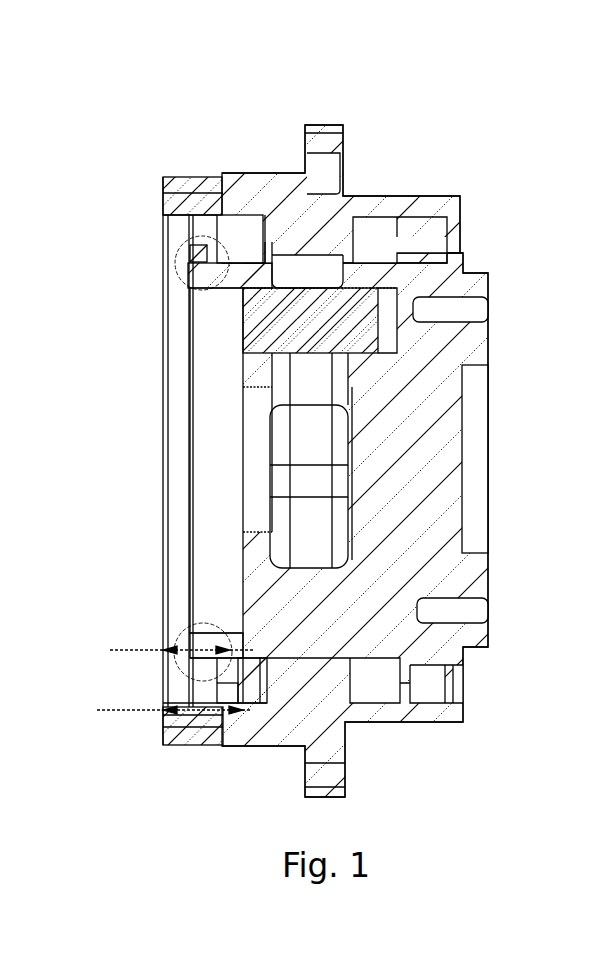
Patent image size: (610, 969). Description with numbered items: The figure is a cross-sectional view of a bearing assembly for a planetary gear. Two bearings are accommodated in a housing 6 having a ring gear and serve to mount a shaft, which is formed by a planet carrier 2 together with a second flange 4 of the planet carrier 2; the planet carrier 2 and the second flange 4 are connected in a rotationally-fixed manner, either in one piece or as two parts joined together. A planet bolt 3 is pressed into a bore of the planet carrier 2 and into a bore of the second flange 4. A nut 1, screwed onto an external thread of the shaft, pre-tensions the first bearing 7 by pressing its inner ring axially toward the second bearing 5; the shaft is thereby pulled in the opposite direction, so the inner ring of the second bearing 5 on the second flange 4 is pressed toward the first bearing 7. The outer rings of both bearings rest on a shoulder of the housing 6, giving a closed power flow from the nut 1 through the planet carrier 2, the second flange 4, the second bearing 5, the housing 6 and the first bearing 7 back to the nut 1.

The nut 1 is at (212, 242).
The planet carrier 2 is at (202, 273).
The planet bolt 3 is at (317, 322).
The second flange 4 is at (432, 272).
The second bearing 5 is at (375, 237).
The housing 6 is at (303, 200).
The first bearing 7 is at (240, 230).